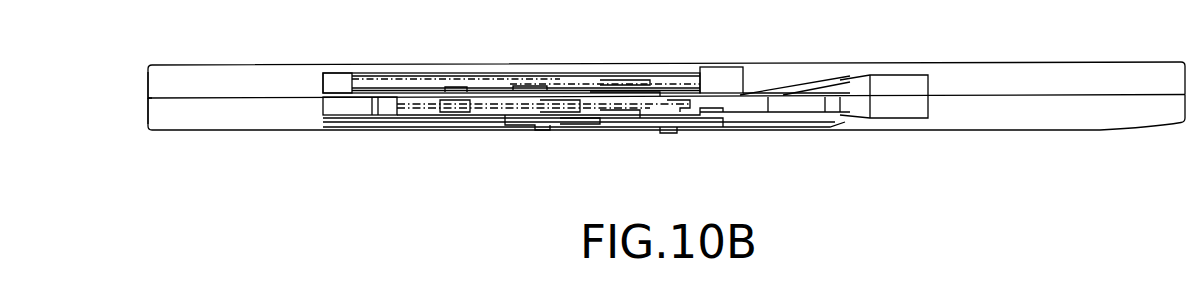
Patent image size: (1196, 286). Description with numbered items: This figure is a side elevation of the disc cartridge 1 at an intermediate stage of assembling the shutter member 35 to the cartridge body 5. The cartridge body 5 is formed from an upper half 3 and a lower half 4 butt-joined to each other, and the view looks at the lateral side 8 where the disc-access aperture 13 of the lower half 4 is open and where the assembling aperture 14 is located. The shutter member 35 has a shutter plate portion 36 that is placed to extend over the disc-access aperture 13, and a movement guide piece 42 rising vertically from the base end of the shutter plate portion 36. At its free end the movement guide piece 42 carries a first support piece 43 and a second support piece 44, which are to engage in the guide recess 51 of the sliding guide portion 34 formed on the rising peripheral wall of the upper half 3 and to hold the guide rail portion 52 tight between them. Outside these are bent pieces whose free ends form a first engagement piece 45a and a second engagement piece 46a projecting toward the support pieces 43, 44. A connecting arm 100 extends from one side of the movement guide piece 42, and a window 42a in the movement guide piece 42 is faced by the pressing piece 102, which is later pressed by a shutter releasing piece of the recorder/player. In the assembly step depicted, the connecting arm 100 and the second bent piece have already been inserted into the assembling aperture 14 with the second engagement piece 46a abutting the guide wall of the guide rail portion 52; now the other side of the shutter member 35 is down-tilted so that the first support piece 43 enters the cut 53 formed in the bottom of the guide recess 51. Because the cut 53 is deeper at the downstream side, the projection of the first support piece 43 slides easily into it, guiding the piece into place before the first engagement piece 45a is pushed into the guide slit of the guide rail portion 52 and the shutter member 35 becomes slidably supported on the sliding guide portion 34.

The disc cartridge 1 is at (923, 17).
The upper half 3 is at (285, 72).
The lower half 4 is at (284, 117).
The cartridge body 5 is at (147, 95).
The lateral side 8 is at (987, 82).
The disc-access aperture 13 is at (530, 130).
The assembling aperture 14 is at (712, 127).
The sliding guide portion 34 is at (487, 80).
The shutter member 35 is at (675, 80).
The shutter plate portion 36 is at (655, 127).
The movement guide piece 42 is at (633, 130).
The window 42a is at (573, 127).
The first support piece 43 is at (645, 75).
The second support piece 44 is at (523, 67).
The first engagement piece 45a is at (688, 130).
The second engagement piece 46a is at (453, 75).
The guide recess 51 is at (582, 75).
The guide rail portion 52 is at (700, 72).
The cut 53 is at (632, 78).
The connecting arm 100 is at (445, 107).
The pressing piece 102 is at (557, 127).